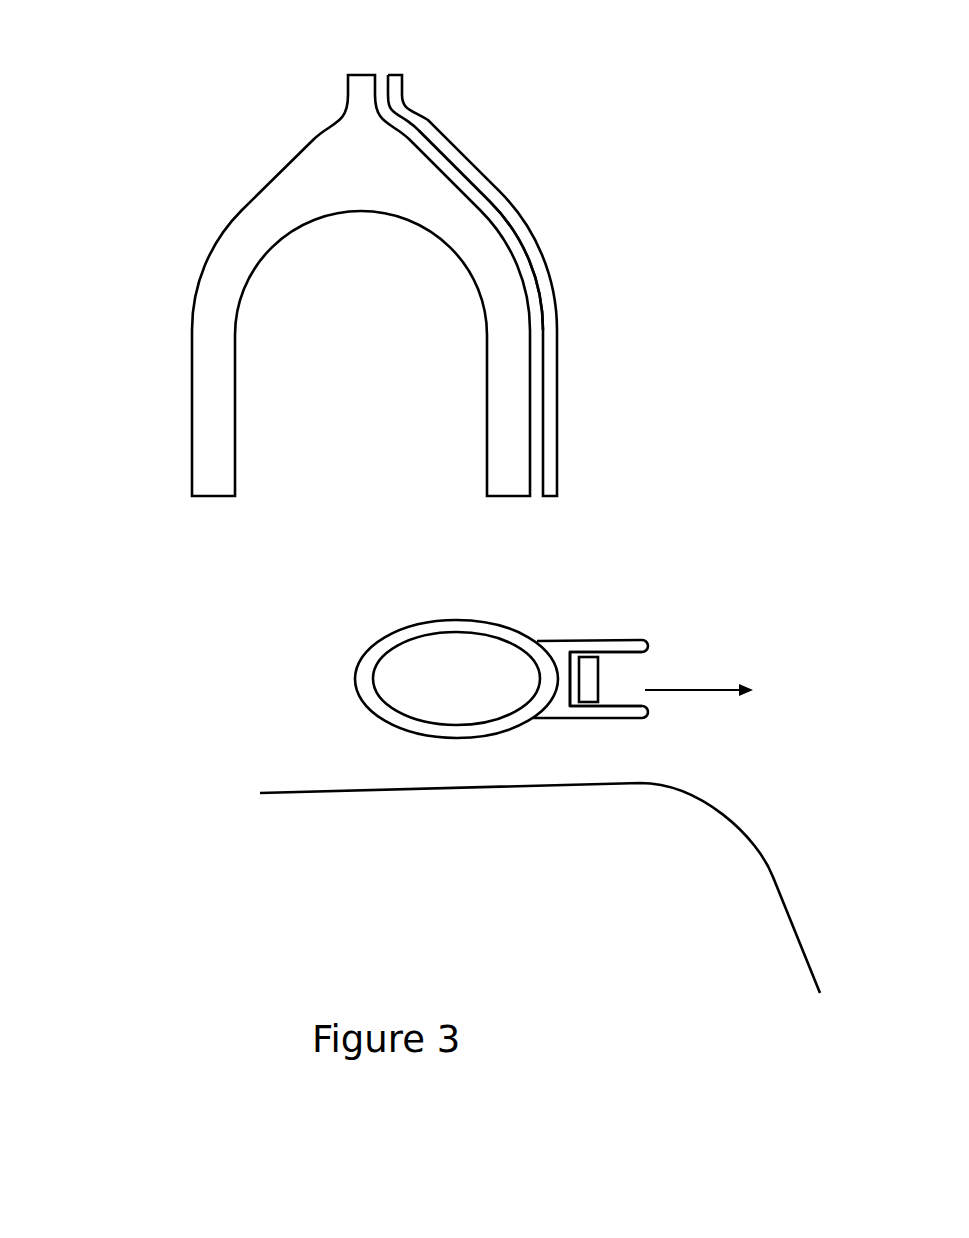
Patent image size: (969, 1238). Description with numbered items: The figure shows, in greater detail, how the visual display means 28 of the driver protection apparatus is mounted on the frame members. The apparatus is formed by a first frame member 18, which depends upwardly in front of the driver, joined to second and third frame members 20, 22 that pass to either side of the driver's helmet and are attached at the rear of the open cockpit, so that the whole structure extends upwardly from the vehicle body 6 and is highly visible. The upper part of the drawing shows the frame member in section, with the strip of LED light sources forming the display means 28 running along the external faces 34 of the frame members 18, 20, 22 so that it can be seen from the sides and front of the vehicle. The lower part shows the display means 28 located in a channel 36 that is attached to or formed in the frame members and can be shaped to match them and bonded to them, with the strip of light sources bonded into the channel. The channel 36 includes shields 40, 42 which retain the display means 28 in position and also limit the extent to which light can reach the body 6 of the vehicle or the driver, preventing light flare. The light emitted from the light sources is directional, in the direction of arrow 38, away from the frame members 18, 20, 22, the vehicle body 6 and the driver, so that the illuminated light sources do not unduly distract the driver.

The vehicle body 6 is at (773, 877).
The first frame member 18 is at (365, 98).
The second frame member 20 is at (202, 392).
The third frame member 22 is at (505, 377).
The visual display means 28 is at (588, 670).
The external faces 34 is at (535, 457).
The channel 36 is at (532, 249).
The arrow 38 is at (719, 692).
The shield 40 is at (607, 645).
The shield 42 is at (622, 712).